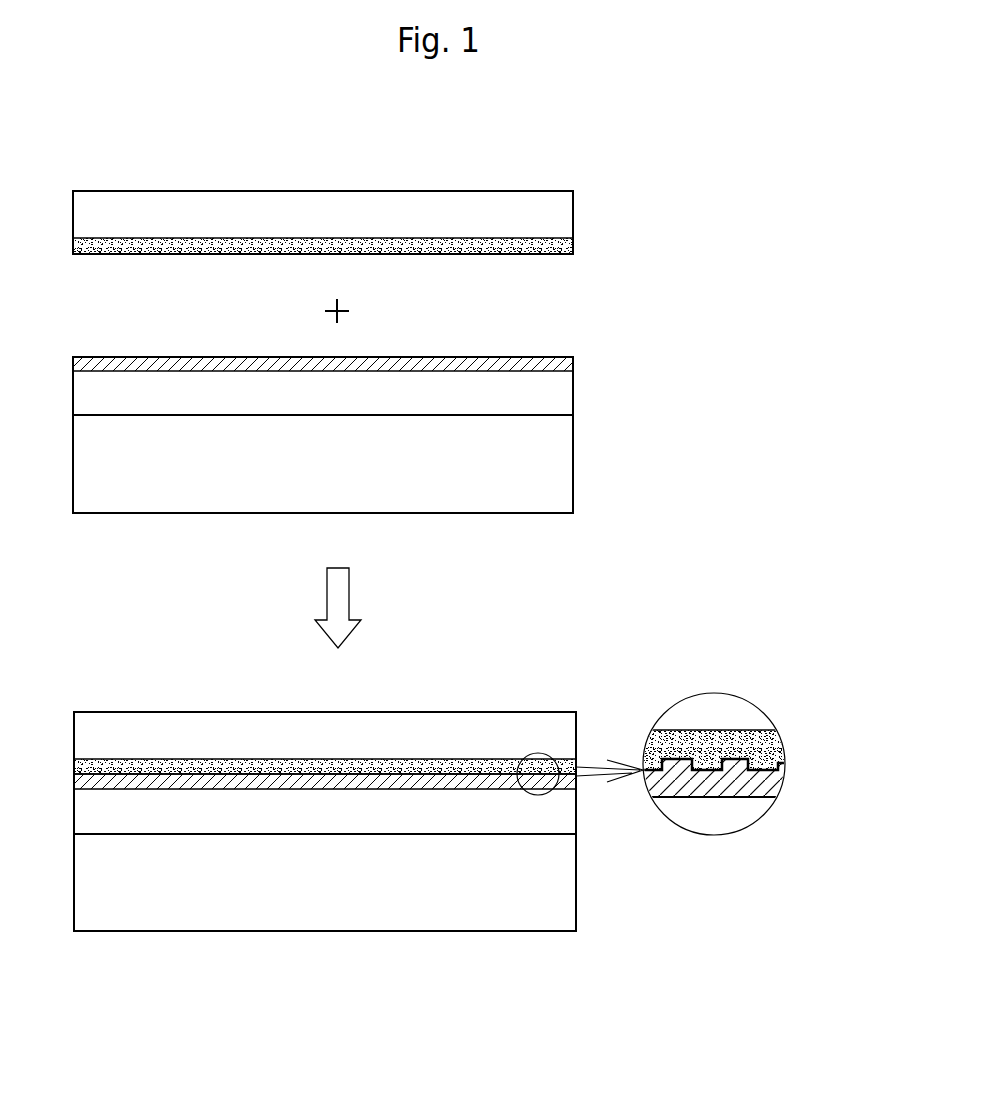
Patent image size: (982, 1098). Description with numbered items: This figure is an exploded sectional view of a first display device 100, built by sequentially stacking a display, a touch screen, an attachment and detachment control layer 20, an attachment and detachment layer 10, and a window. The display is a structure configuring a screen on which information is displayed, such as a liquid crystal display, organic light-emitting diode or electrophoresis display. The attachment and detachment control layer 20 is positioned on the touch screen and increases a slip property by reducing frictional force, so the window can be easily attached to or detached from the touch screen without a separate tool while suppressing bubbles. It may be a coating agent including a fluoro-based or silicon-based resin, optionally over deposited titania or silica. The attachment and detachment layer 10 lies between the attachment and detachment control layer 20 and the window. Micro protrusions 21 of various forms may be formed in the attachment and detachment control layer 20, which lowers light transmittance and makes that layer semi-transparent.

The first display device 100 is at (584, 162).
The attachment and detachment layer 10 is at (570, 248).
The attachment and detachment control layer 20 is at (567, 366).
The micro protrusion 21 is at (735, 766).